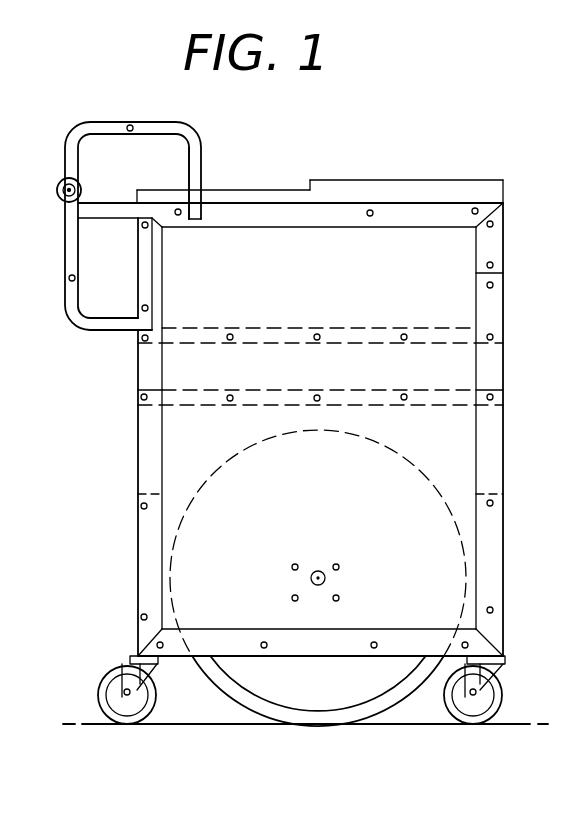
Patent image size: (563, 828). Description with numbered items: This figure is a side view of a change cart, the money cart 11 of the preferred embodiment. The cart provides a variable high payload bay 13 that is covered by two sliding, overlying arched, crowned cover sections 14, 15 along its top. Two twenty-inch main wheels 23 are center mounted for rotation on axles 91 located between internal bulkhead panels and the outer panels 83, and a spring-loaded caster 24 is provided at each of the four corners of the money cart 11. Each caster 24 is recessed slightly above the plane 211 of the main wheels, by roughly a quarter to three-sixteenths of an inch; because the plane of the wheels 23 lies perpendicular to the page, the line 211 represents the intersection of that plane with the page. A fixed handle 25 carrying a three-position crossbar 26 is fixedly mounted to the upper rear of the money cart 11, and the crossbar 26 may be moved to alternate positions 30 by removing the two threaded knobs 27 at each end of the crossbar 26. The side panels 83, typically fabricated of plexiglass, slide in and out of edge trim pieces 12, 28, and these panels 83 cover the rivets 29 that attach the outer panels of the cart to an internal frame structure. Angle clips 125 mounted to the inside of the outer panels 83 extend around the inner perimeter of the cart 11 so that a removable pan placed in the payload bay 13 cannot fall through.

The money cart 11 is at (413, 157).
The edge trim piece 12 is at (497, 223).
The payload bay 13 is at (460, 258).
The cover section 14 is at (236, 195).
The cover section 15 is at (363, 188).
The main wheel 23 is at (362, 718).
The spring-loaded caster 24 is at (127, 705).
The fixed handle 25 is at (187, 140).
The crossbar 26 is at (84, 188).
The threaded knob 27 is at (58, 184).
The edge trim piece 28 is at (312, 215).
The rivet 29 is at (233, 398).
The alternate position 30 is at (130, 125).
The side panel 83 is at (462, 448).
The axle 91 is at (318, 570).
The angle clip 125 is at (355, 329).
The plane of the wheels 211 is at (201, 718).